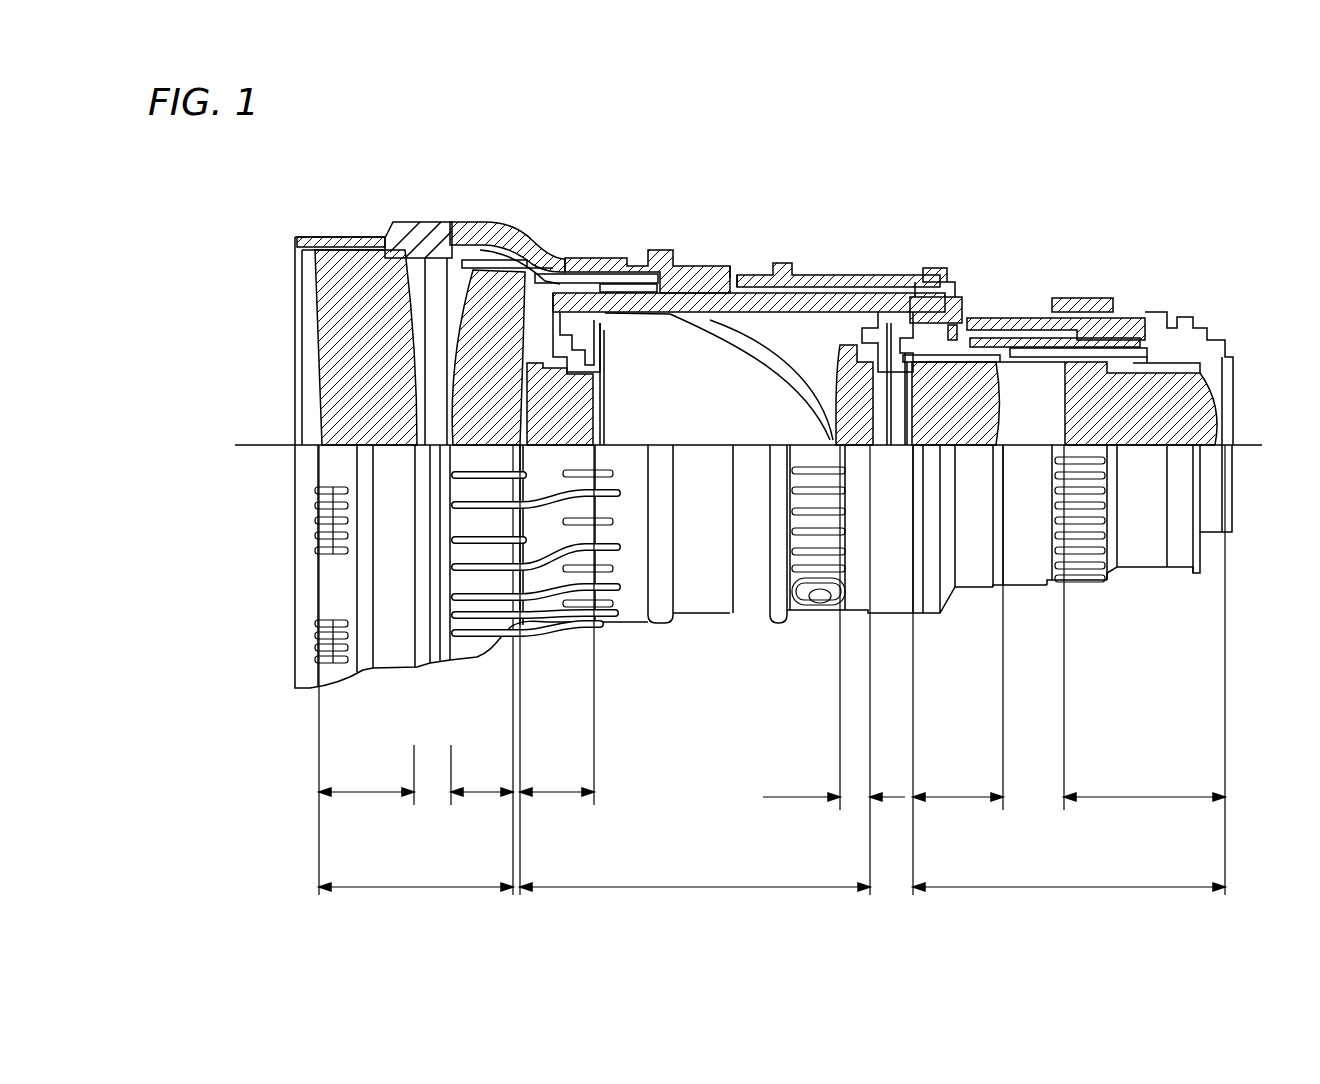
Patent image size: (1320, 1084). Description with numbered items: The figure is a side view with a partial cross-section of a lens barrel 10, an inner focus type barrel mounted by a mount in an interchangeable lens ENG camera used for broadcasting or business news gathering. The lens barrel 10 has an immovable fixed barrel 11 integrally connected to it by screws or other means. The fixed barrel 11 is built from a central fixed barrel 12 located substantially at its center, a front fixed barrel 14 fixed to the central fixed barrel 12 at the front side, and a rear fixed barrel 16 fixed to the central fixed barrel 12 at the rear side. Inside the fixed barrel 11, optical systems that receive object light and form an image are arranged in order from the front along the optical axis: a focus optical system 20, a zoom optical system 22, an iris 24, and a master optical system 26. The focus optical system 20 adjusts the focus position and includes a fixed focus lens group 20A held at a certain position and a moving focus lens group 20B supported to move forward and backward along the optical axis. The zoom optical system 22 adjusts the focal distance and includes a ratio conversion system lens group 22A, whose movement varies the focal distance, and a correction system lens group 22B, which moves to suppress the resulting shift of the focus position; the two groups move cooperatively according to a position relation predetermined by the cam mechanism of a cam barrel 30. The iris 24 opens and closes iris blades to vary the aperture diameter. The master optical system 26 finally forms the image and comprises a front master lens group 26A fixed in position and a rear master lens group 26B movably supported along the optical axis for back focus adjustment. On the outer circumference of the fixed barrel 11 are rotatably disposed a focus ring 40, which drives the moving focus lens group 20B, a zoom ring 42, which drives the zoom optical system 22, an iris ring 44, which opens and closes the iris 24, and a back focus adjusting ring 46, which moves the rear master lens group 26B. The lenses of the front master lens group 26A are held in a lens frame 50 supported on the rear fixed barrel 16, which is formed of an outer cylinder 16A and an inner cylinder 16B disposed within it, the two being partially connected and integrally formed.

The lens barrel 10 is at (803, 170).
The fixed barrel 11 is at (737, 270).
The central fixed barrel 12 is at (762, 292).
The front fixed barrel 14 is at (597, 260).
The rear fixed barrel 16 is at (980, 318).
The outer cylinder 16A is at (1125, 318).
The inner cylinder 16B is at (1040, 352).
The focus optical system 20 is at (404, 558).
The fixed focus lens group 20A is at (366, 527).
The moving focus lens group 20B is at (502, 532).
The zoom optical system 22 is at (716, 668).
The ratio conversion system lens group 22A is at (562, 594).
The correction system lens group 22B is at (834, 609).
The iris 24 is at (870, 400).
The master optical system 26 is at (1072, 668).
The front master lens group 26A is at (955, 628).
The rear master lens group 26B is at (1144, 628).
The cam barrel 30 is at (640, 318).
The focus ring 40 is at (518, 232).
The zoom ring 42 is at (843, 300).
The iris ring 44 is at (930, 268).
The back focus adjusting ring 46 is at (1088, 297).
The lens frame 50 is at (1000, 348).